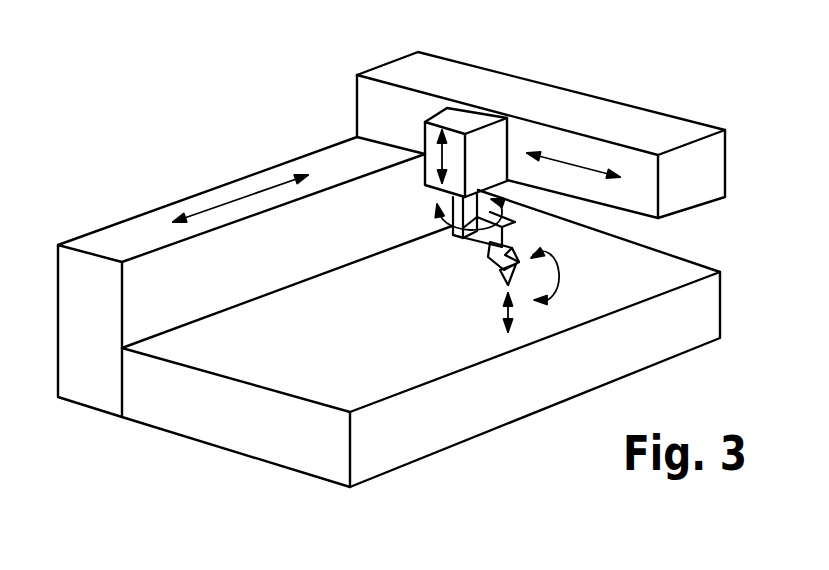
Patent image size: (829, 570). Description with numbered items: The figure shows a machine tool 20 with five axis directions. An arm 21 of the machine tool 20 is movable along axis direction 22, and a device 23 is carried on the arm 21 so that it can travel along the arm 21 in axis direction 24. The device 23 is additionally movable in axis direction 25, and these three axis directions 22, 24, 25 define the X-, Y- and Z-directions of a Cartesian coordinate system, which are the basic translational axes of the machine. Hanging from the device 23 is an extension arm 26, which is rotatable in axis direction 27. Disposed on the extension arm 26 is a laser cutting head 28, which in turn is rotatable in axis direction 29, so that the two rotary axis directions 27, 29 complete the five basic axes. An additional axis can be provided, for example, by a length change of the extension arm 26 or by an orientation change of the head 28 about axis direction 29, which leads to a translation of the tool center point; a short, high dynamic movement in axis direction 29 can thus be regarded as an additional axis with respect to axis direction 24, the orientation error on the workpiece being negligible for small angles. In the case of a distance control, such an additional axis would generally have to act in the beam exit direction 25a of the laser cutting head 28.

The machine tool 20 is at (227, 432).
The arm 21 is at (528, 98).
The axis direction 22 is at (242, 197).
The device 23 is at (433, 212).
The axis direction 24 is at (572, 164).
The axis direction 25 is at (425, 155).
The beam exit direction 25a is at (512, 315).
The extension arm 26 is at (460, 235).
The axis direction 27 is at (472, 247).
The laser cutting head 28 is at (498, 264).
The axis direction 29 is at (562, 278).